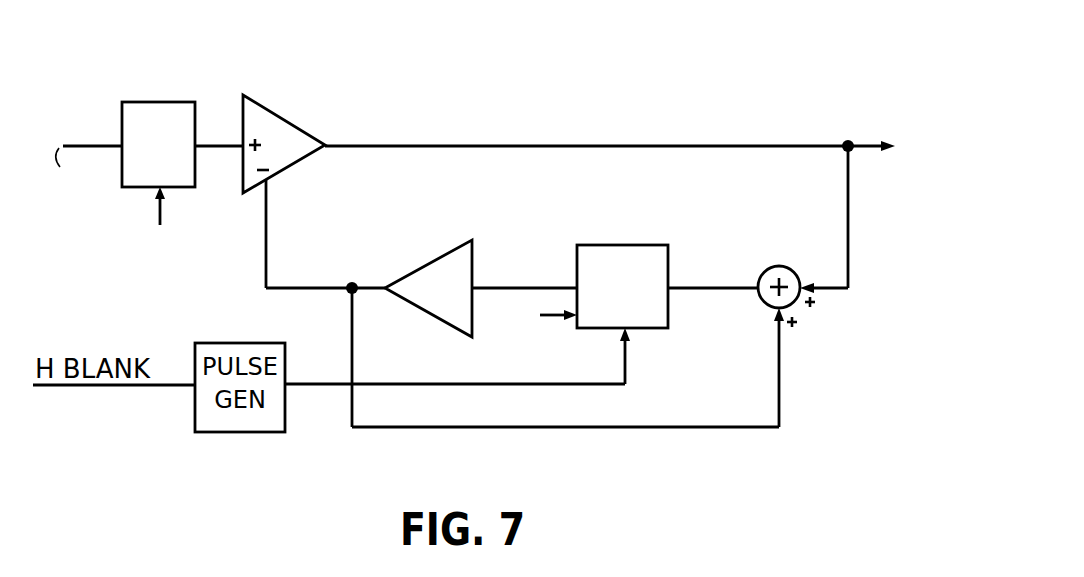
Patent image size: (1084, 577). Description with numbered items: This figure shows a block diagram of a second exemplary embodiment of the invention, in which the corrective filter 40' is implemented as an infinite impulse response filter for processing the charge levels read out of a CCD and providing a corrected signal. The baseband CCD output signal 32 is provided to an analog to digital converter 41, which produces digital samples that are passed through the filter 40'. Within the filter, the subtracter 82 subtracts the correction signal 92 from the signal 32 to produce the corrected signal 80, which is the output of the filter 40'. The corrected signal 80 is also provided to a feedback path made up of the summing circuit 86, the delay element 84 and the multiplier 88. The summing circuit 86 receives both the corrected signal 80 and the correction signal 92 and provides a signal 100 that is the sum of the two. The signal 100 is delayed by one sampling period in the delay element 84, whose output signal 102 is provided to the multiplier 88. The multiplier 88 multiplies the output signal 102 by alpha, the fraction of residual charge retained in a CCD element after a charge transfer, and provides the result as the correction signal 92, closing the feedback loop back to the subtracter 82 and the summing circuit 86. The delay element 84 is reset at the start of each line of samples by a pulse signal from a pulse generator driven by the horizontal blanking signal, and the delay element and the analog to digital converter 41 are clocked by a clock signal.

The baseband CCD output signal 32 is at (86, 144).
The analog to digital converter 41 is at (160, 102).
The subtracter 82 is at (283, 118).
The filter 40' is at (488, 68).
The corrected signal 80 is at (657, 145).
The correction signal 92 is at (373, 286).
The multiplier 88 is at (443, 220).
The output signal from delay element 102 is at (532, 287).
The delay element 84 is at (635, 245).
The sum signal 100 is at (715, 285).
The summing circuit 86 is at (781, 267).